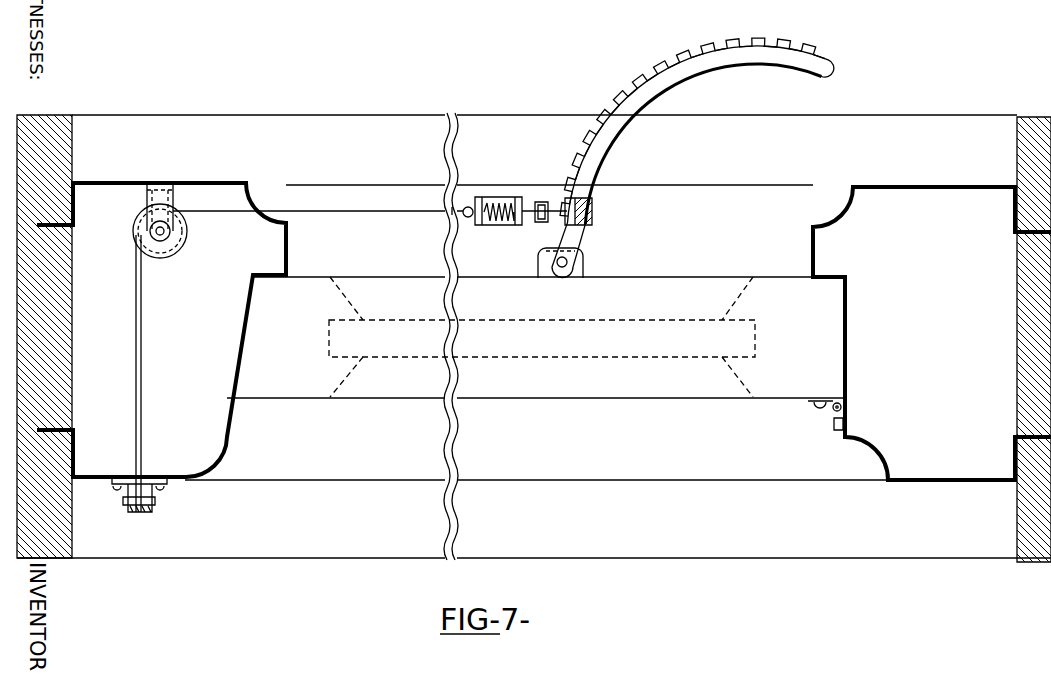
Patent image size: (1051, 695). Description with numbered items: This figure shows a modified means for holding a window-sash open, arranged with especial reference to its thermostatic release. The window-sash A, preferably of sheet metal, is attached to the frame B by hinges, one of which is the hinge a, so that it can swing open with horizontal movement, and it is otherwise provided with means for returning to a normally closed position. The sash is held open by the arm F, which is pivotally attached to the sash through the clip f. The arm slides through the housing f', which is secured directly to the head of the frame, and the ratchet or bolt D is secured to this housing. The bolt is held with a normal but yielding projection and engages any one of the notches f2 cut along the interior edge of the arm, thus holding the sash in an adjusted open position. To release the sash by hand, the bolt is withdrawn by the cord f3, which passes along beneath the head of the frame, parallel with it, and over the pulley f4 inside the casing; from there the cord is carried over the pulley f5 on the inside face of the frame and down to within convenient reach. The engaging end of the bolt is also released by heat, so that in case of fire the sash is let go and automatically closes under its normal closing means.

The arm F is at (693, 148).
The notches f2 is at (717, 44).
The ratchet or bolt D is at (532, 193).
The housing f' is at (499, 228).
The clip f is at (573, 261).
The cord f3 is at (323, 229).
The pulley f4 is at (173, 248).
The pulley f5 is at (143, 515).
The window-sash A is at (772, 400).
The hinge a is at (831, 413).
The frame B is at (544, 347).